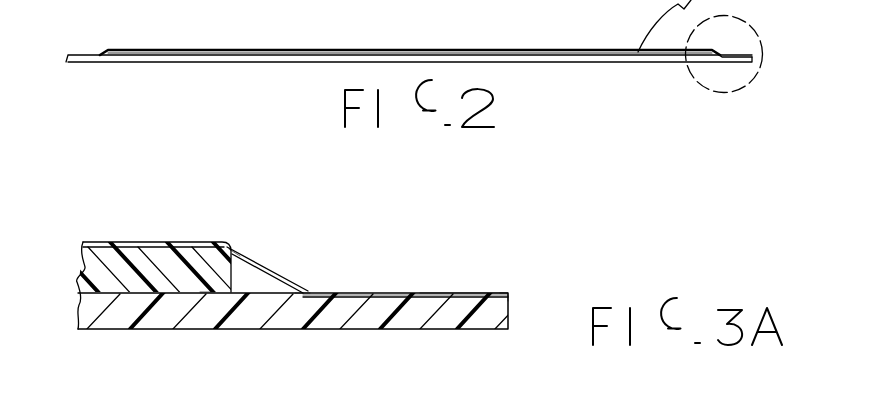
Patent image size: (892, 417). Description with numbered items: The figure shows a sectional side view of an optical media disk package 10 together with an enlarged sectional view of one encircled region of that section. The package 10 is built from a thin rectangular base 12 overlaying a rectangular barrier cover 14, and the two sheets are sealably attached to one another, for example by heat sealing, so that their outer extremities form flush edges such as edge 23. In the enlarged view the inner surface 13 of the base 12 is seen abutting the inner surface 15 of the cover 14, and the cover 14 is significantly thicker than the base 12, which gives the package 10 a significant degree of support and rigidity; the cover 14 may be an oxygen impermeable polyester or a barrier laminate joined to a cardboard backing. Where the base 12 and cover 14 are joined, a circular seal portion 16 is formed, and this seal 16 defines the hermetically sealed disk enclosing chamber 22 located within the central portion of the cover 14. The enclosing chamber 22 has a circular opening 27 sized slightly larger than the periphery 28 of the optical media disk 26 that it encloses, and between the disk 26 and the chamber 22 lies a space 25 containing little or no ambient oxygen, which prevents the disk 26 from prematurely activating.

In FIG. 3A, the package 10 is at (387, 244).
In FIG. 3A, the base 12 is at (428, 292).
In FIG. 3A, the inner surface 13 is at (370, 295).
In FIG. 2, the barrier cover 14 is at (610, 63).
In FIG. 3A, the barrier cover 14 is at (436, 320).
In FIG. 3A, the inner surface 15 is at (489, 304).
In FIG. 2, the circular seal portion 16 is at (517, 28).
In FIG. 3A, the circular seal portion 16 is at (313, 291).
In FIG. 3A, the disk enclosing chamber 22 is at (248, 277).
In FIG. 3A, the flush edge 23 is at (508, 291).
In FIG. 3A, the space 25 is at (235, 272).
In FIG. 2, the optical media disk 26 is at (138, 55).
In FIG. 3A, the optical media disk 26 is at (163, 265).
In FIG. 3A, the circular opening 27 is at (298, 296).
In FIG. 2, the periphery 28 is at (703, 62).
In FIG. 3A, the periphery 28 is at (207, 292).